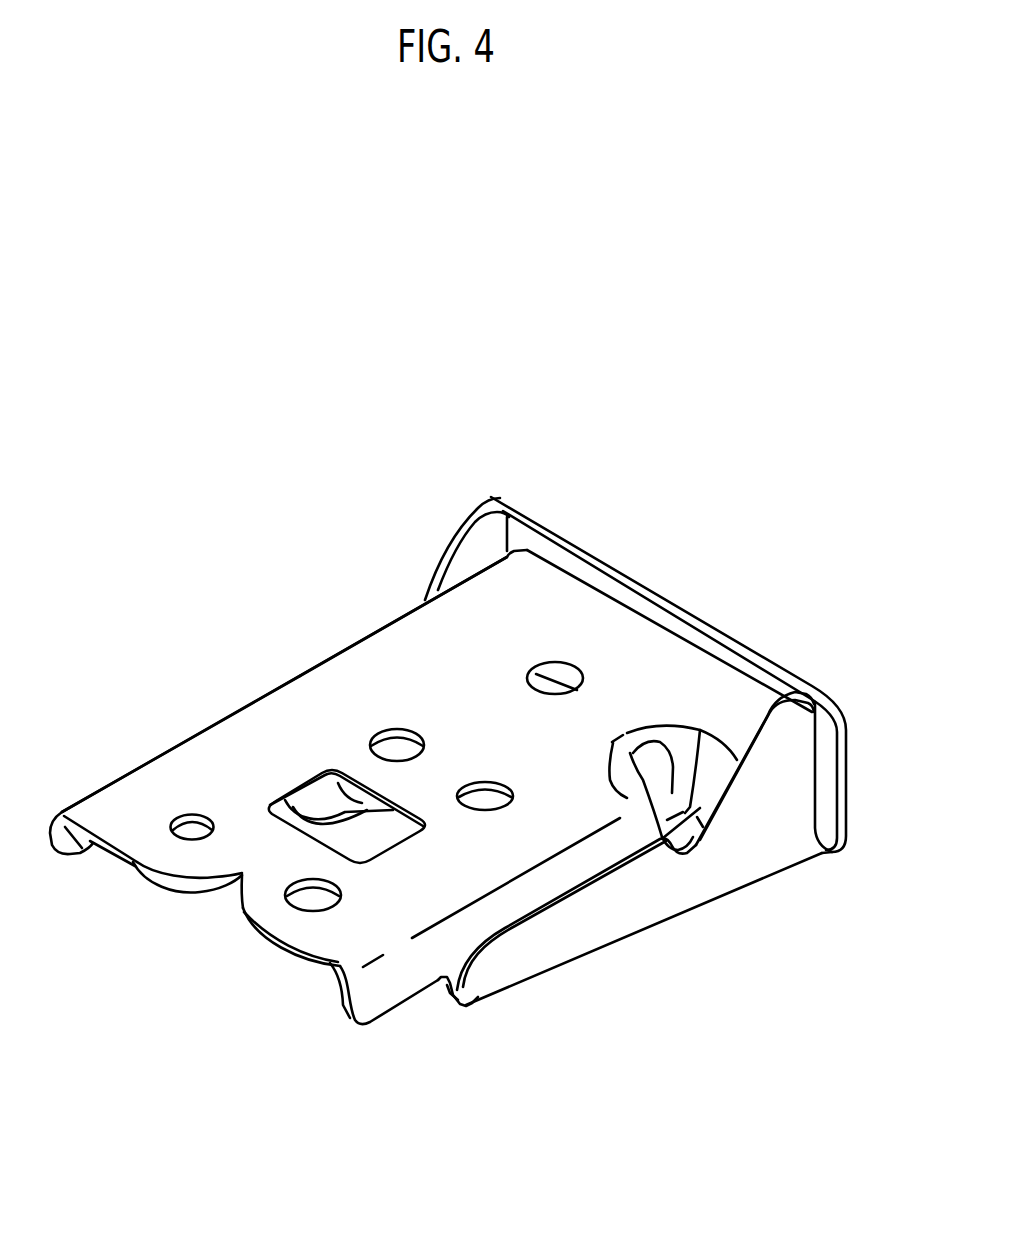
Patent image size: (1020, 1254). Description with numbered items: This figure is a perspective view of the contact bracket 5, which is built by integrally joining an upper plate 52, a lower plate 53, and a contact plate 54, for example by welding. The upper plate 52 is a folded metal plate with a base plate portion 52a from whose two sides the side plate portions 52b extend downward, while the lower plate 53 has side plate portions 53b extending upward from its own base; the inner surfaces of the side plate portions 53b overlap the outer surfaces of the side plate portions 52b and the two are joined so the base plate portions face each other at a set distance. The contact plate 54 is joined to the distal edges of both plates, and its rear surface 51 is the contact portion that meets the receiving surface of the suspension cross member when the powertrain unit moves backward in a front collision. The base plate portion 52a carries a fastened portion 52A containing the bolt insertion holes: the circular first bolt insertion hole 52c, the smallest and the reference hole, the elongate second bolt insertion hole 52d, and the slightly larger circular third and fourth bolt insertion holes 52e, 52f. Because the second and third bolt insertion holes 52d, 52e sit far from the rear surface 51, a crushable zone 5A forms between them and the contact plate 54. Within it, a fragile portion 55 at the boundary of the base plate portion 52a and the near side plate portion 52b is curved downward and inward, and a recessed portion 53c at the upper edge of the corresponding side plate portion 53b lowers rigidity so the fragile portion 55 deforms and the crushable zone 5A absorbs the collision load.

The contact bracket 5 is at (143, 543).
The crushable zone 5A is at (482, 695).
The rear surface of the contact plate 51 is at (725, 625).
The upper plate 52 is at (345, 636).
The base plate portion 52a is at (417, 640).
The fastened portion 52A is at (270, 753).
The side plate portions 52b is at (75, 838).
The first bolt insertion hole 52c is at (192, 820).
The second bolt insertion hole 52d is at (512, 812).
The third bolt insertion hole 52e is at (380, 740).
The fourth bolt insertion hole 52f is at (312, 887).
The lower plate 53 is at (718, 903).
The side plate portions 53b is at (630, 927).
The recessed portion 53c is at (698, 835).
The contact plate 54 is at (641, 570).
The fragile portion 55 is at (672, 793).